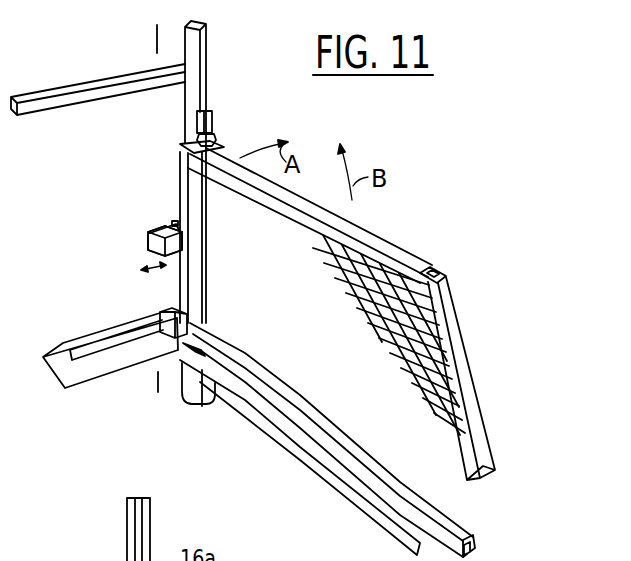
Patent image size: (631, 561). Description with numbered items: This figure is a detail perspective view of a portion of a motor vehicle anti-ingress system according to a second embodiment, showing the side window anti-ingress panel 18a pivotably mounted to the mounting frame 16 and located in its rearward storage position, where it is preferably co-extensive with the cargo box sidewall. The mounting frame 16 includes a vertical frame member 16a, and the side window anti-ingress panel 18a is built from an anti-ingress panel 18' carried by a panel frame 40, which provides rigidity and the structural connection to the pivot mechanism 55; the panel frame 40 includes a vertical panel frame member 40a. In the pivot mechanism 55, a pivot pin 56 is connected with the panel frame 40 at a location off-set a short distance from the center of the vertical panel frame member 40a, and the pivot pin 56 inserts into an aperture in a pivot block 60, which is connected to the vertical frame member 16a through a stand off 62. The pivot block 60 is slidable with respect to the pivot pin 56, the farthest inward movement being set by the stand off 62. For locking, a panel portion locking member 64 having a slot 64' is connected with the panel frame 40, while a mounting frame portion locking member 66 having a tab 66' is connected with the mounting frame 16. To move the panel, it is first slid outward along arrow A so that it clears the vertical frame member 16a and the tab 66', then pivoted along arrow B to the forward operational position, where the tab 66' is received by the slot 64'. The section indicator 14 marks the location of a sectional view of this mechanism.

The section line indicator (FIG. 14) 14 is at (150, 395).
The mounting frame 16 is at (127, 551).
The vertical frame member 16a is at (185, 127).
The side window anti-ingress panel 18a is at (366, 233).
The anti-ingress panel 18' is at (408, 335).
The panel frame 40 is at (404, 256).
The vertical panel frame member 40a is at (208, 243).
The pivot mechanism 55 is at (150, 219).
The pivot pin 56 is at (147, 252).
The pivot block 60 is at (174, 224).
The stand off 62 is at (148, 233).
The panel portion locking member 64 is at (152, 308).
The slot 64' is at (225, 326).
The mounting frame portion locking member 66 is at (229, 109).
The tab 66' is at (226, 134).